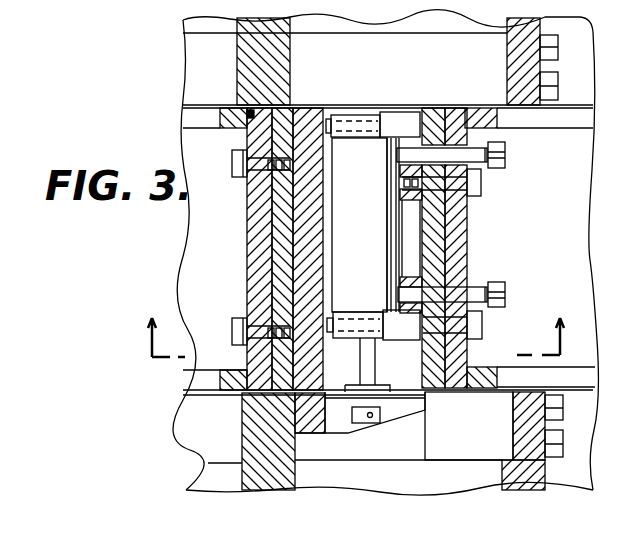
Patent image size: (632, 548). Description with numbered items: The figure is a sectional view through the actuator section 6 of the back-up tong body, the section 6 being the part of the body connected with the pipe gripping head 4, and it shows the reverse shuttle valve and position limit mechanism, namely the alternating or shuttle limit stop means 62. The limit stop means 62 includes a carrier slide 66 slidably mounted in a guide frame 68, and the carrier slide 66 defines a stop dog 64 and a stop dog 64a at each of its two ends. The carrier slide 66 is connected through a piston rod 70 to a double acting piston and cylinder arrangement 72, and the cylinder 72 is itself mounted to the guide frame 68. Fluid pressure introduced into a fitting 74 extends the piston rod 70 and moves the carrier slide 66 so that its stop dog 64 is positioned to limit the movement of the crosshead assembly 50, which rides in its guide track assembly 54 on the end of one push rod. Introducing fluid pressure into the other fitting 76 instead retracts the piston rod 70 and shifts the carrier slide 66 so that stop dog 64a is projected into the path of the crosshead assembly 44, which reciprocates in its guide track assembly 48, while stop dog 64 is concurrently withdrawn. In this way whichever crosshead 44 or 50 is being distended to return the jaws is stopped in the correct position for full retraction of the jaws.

The actuator section 6 is at (606, 222).
The guide track assembly 48 is at (200, 71).
The crosshead assembly 44 is at (280, 68).
The guide frame 68 is at (282, 233).
The carrier slide 66 is at (302, 259).
The shuttle limit stop means 62 is at (492, 245).
The double acting piston and cylinder arrangement 72 is at (373, 247).
The stop dog 64a is at (420, 133).
The fitting 74 is at (506, 151).
The fitting 76 is at (506, 292).
The piston rod 70 is at (376, 360).
The stop dog 64 is at (352, 425).
The guide track assembly 54 is at (216, 439).
The crosshead assembly 50 is at (255, 476).
The pipe gripping head 4 is at (346, 342).